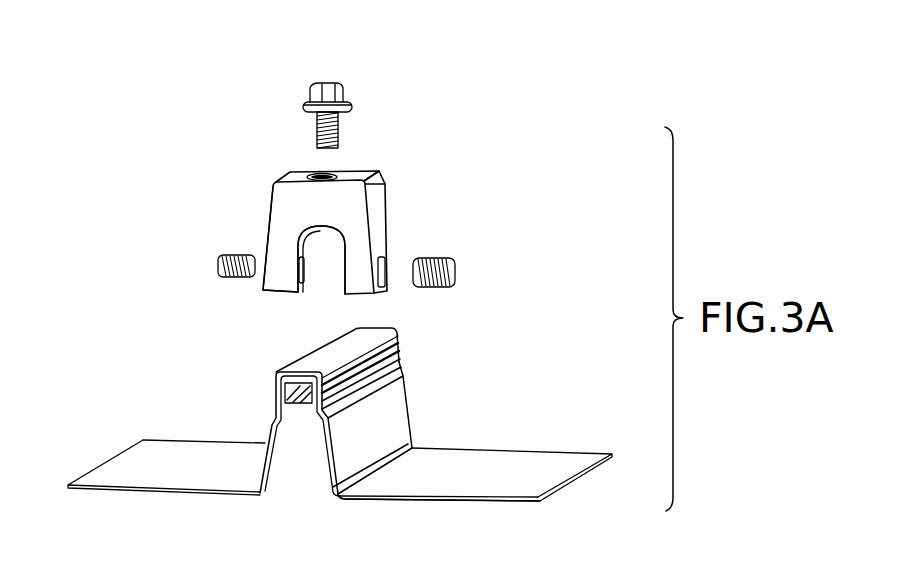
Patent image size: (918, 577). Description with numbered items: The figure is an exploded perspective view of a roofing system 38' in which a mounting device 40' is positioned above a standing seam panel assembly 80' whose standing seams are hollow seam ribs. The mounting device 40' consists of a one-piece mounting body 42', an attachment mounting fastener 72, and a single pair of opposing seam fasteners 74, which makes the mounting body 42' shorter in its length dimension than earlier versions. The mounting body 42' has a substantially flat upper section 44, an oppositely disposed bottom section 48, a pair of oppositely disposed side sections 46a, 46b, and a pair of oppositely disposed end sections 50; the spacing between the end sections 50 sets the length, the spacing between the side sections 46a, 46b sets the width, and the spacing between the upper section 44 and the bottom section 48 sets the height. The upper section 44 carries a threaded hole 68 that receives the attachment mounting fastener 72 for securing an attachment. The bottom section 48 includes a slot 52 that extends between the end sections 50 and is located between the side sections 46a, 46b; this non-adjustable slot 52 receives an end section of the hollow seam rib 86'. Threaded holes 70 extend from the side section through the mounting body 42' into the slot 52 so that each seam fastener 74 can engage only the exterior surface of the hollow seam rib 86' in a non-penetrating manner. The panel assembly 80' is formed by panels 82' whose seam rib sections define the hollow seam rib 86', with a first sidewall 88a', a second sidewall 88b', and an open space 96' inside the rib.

The roofing system 38' is at (359, 295).
The mounting device 40' is at (332, 203).
The mounting body 42' is at (305, 228).
The upper section 44 is at (305, 181).
The side section 46a is at (270, 208).
The side section 46b is at (382, 222).
The bottom section 48 is at (274, 291).
The end sections 50 is at (352, 180).
The slot 52 is at (310, 290).
The threaded hole 68 is at (320, 176).
The threaded hole 70 is at (388, 256).
The attachment mounting fastener 72 is at (322, 82).
The seam fastener 74 is at (216, 264).
The panel assembly 80' is at (359, 435).
The panels 82' is at (342, 479).
The hollow seam rib 86' is at (382, 343).
The first sidewall 88a' is at (346, 436).
The second sidewall 88b' is at (373, 453).
The open space 96' is at (329, 503).